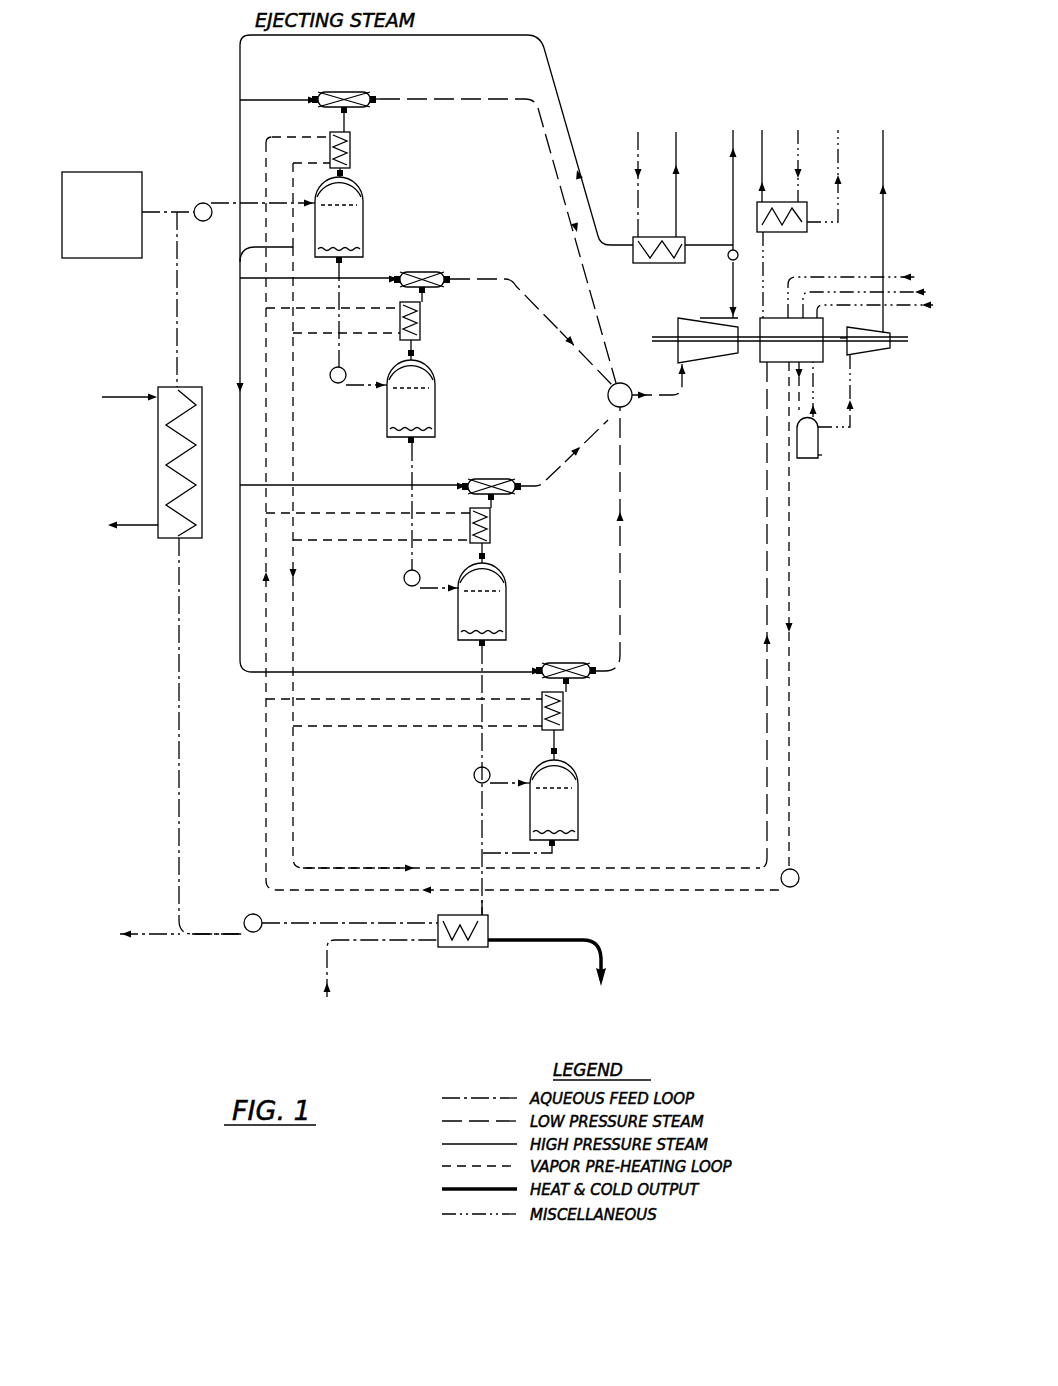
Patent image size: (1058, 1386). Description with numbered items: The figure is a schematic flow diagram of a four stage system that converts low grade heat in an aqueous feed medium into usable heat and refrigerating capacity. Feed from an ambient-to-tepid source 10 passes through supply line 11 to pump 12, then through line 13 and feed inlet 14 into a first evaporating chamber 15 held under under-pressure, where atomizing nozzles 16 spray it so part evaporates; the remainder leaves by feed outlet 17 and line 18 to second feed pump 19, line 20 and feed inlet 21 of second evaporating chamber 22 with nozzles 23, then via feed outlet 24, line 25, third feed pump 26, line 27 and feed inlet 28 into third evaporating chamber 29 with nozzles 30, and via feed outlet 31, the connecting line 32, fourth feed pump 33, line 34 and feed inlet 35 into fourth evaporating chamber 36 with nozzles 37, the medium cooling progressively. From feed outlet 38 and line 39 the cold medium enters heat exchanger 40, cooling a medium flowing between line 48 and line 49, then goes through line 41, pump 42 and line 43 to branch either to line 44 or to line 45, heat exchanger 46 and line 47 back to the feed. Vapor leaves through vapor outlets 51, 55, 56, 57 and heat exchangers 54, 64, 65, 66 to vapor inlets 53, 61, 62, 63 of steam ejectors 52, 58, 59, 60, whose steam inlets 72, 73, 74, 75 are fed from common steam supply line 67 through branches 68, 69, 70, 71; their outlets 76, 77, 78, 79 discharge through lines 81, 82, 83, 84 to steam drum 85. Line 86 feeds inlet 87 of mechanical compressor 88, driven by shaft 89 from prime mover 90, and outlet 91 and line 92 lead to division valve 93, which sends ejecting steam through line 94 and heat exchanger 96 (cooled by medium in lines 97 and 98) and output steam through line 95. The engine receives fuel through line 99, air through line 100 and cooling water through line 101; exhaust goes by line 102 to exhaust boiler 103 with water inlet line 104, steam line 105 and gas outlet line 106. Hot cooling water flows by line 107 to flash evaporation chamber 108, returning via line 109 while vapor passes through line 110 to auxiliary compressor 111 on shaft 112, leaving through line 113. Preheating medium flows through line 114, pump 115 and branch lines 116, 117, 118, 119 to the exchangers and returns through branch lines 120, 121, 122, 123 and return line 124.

The ambient-to-tepid source 10 is at (125, 172).
The supply line 11 is at (160, 222).
The pump 12 is at (210, 220).
The line 13 is at (219, 200).
The feed inlet 14 is at (312, 200).
The first evaporating chamber 15 is at (365, 236).
The atomizing nozzles 16 is at (355, 188).
The feed outlet 17 is at (350, 257).
The line 18 is at (338, 350).
The second feed pump 19 is at (336, 385).
The line 20 is at (362, 388).
The feed inlet 21 is at (385, 383).
The second evaporating chamber 22 is at (437, 412).
The atomizing nozzles 23 is at (425, 366).
The feed outlet 24 is at (405, 443).
The line 25 is at (410, 528).
The third feed pump 26 is at (403, 580).
The line 27 is at (432, 590).
The feed inlet 28 is at (455, 584).
The third evaporating chamber 29 is at (508, 616).
The atomizing nozzles 30 is at (497, 572).
The feed outlet 31 is at (480, 648).
The liquid transfer line 32 is at (449, 780).
The fourth feed pump 33 is at (475, 787).
The line 34 is at (500, 785).
The feed inlet 35 is at (525, 780).
The fourth evaporating chamber 36 is at (580, 815).
The atomizing nozzles 37 is at (572, 773).
The feed outlet 38 is at (567, 845).
The line 39 is at (480, 910).
The heat exchanger 40 is at (462, 948).
The line 41 is at (295, 925).
The pump 42 is at (262, 932).
The line 43 is at (218, 936).
The line 44 is at (172, 938).
The line 45 is at (178, 812).
The second heat exchanger 46 is at (157, 425).
The line 47 is at (175, 330).
The line 48 is at (122, 397).
The line 49 is at (135, 528).
The vapor outlet 51 is at (347, 172).
The steam ejector 52 is at (338, 90).
The vapor inlet 53 is at (332, 108).
The heat exchanger 54 is at (351, 145).
The vapor outlet 55 is at (417, 353).
The vapor outlet 56 is at (487, 566).
The vapor outlet 57 is at (560, 750).
The steam ejector 58 is at (425, 270).
The steam ejector 59 is at (482, 477).
The steam ejector 60 is at (563, 662).
The vapor inlet 61 is at (428, 290).
The vapor inlet 62 is at (493, 503).
The vapor inlet 63 is at (565, 683).
The heat exchanger 64 is at (421, 320).
The heat exchanger 65 is at (493, 532).
The heat exchanger 66 is at (564, 712).
The common steam supply line 67 is at (480, 36).
The branch 68 is at (272, 100).
The branch 69 is at (255, 278).
The branch 70 is at (342, 484).
The branch 71 is at (358, 670).
The steam inlet 72 is at (318, 97).
The steam inlet 73 is at (397, 285).
The steam inlet 74 is at (466, 484).
The steam inlet 75 is at (540, 676).
The outlet 76 is at (375, 98).
The outlet 77 is at (448, 278).
The outlet 78 is at (522, 488).
The outlet 79 is at (622, 646).
The line 81 is at (572, 222).
The line 82 is at (570, 340).
The line 83 is at (597, 430).
The line 84 is at (623, 552).
The first-pressure steam drum 85 is at (632, 405).
The line 86 is at (672, 397).
The inlet 87 is at (680, 370).
The mechanical compressor 88 is at (677, 330).
The shaft 89 is at (746, 342).
The prime mover 90 is at (833, 362).
The outlet 91 is at (720, 318).
The line 92 is at (733, 288).
The division valve 93 is at (728, 258).
The line 94 is at (702, 245).
The line 95 is at (732, 146).
The heat exchanger 96 is at (652, 237).
The line 97 is at (635, 138).
The line 98 is at (672, 137).
The line 99 is at (905, 277).
The line 100 is at (925, 290).
The line 101 is at (935, 305).
The line 102 is at (765, 250).
The exhaust boiler 103 is at (806, 230).
The line 104 is at (800, 130).
The line 105 is at (765, 130).
The line 106 is at (840, 130).
The line 107 is at (798, 412).
The flash evaporation chamber 108 is at (820, 450).
The line 109 is at (815, 382).
The line 110 is at (852, 428).
The auxiliary compressor 111 is at (885, 347).
The shaft 112 is at (840, 333).
The line 113 is at (884, 135).
The line 114 is at (792, 660).
The pump 115 is at (797, 872).
The branch line 116 is at (522, 515).
The branch line 117 is at (327, 306).
The branch line 118 is at (338, 512).
The branch line 119 is at (405, 698).
The branch line 120 is at (245, 252).
The branch line 121 is at (525, 517).
The branch line 122 is at (340, 542).
The branch line 123 is at (358, 728).
The return line 124 is at (392, 866).